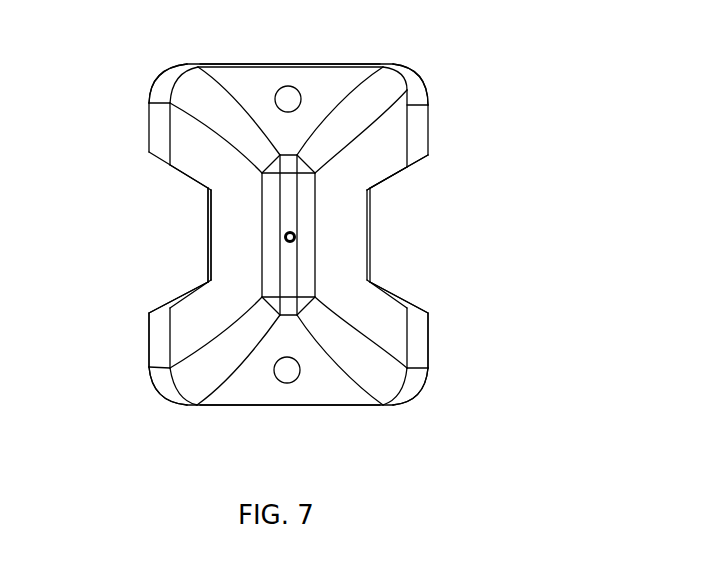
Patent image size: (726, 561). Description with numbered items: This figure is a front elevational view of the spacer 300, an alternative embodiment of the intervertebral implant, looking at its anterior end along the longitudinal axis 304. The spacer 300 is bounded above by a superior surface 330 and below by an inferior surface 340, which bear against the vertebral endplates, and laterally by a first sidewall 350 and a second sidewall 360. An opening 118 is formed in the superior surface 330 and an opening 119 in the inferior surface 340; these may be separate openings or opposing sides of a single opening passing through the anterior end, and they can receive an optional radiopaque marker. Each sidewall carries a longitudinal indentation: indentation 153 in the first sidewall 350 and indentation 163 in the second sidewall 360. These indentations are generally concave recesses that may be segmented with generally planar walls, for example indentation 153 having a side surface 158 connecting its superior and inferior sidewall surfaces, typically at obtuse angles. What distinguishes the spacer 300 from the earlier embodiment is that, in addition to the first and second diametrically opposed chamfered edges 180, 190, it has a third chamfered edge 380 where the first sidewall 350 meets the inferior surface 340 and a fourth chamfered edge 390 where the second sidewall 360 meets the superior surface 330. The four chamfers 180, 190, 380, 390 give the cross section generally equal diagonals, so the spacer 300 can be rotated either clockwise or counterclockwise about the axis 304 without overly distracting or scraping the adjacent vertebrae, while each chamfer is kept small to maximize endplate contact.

The spacer 300 is at (487, 53).
The opening 118 is at (290, 98).
The opening 119 is at (283, 373).
The longitudinal axis 304 is at (290, 237).
The superior surface 330 is at (335, 66).
The inferior surface 340 is at (337, 407).
The fourth chamfered edge 390 is at (412, 91).
The first chamfered edge 180 is at (167, 83).
The longitudinal indentation 163 is at (400, 222).
The side surface 158 is at (205, 210).
The longitudinal indentation 153 is at (193, 248).
The first sidewall 350 is at (149, 321).
The second sidewall 360 is at (430, 343).
The third chamfered edge 380 is at (168, 387).
The second chamfered edge 190 is at (407, 392).